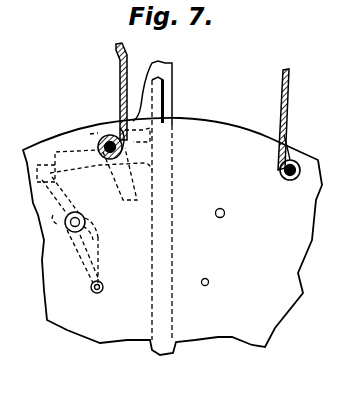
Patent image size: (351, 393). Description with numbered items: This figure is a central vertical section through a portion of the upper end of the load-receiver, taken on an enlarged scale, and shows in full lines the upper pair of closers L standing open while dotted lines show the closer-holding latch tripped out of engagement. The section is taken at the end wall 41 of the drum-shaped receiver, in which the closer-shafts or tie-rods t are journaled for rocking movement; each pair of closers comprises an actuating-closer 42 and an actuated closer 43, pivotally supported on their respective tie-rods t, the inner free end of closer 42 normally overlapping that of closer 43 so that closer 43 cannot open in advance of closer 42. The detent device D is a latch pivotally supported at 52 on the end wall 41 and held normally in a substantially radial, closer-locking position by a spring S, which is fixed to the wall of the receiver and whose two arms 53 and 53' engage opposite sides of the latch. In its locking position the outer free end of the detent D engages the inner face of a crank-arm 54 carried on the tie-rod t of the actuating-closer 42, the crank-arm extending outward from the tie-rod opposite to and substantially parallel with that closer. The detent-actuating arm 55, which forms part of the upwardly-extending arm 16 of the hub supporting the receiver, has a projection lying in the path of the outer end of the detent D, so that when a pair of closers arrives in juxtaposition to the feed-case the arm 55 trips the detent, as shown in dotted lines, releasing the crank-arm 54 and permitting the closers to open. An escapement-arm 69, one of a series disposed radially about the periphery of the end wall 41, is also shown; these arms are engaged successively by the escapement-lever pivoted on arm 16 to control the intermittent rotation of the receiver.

The upwardly-extending arm 16 is at (162, 63).
The end wall 41 is at (231, 135).
The actuating-closer 42 is at (287, 111).
The actuated closer 43 is at (120, 77).
The pivot 52 is at (85, 221).
The spring arm 53 is at (104, 250).
The spring arm 53' is at (56, 230).
The crank-arm 54 is at (131, 178).
The detent-actuating arm 55 is at (53, 152).
The escapement-arm 69 is at (164, 101).
The tie-rod t is at (103, 130).
The pair of closers L is at (104, 95).
The detent device D is at (62, 204).
The spring S is at (90, 286).